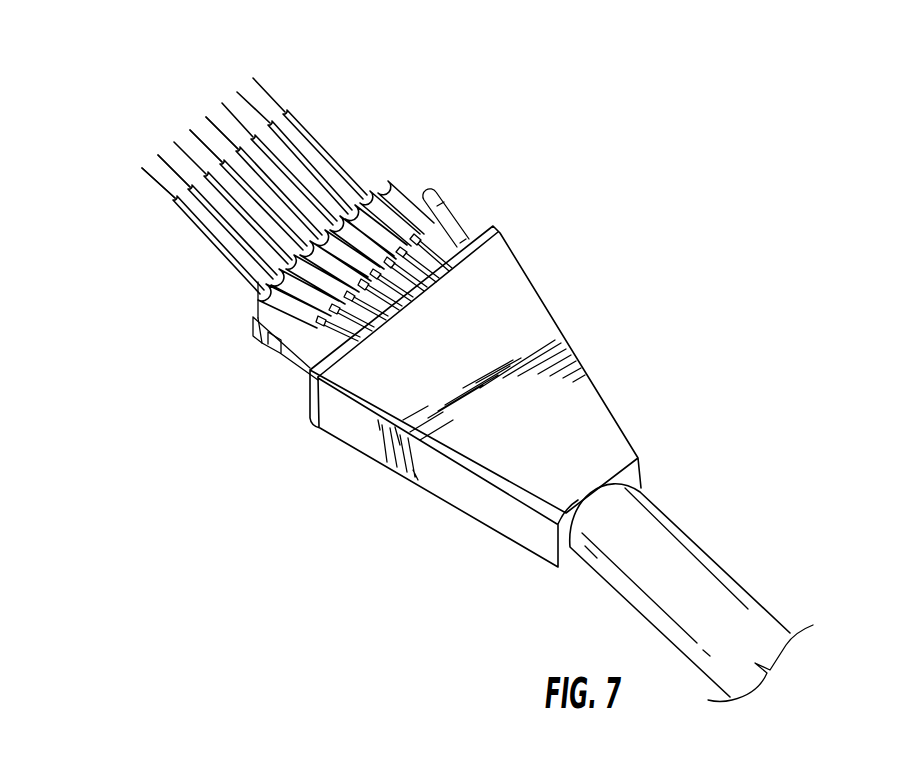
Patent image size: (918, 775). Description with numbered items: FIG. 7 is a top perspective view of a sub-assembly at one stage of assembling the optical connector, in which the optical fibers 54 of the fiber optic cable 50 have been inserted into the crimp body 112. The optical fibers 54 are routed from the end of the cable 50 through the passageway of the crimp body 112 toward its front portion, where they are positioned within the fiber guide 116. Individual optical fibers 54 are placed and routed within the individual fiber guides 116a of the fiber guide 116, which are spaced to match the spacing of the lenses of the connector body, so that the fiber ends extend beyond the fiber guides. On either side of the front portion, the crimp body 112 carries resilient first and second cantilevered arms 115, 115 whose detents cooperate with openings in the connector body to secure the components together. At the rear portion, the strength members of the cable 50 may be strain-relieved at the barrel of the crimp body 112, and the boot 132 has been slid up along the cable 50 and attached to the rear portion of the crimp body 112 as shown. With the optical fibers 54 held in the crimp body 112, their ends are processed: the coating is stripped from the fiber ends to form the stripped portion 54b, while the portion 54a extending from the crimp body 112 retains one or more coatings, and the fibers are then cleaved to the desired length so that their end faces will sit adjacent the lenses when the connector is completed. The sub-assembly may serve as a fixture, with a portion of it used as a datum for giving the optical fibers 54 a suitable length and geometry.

The optical fibers 54 is at (360, 195).
The coated fiber portion 54a is at (250, 298).
The stripped fiber portion 54b is at (161, 214).
The fiber guide 116 is at (400, 202).
The individual fiber guides 116a is at (383, 195).
The cantilevered arms 115 is at (440, 200).
The crimp body 112 is at (500, 231).
The boot 132 is at (597, 422).
The fiber optic cable 50 is at (713, 582).